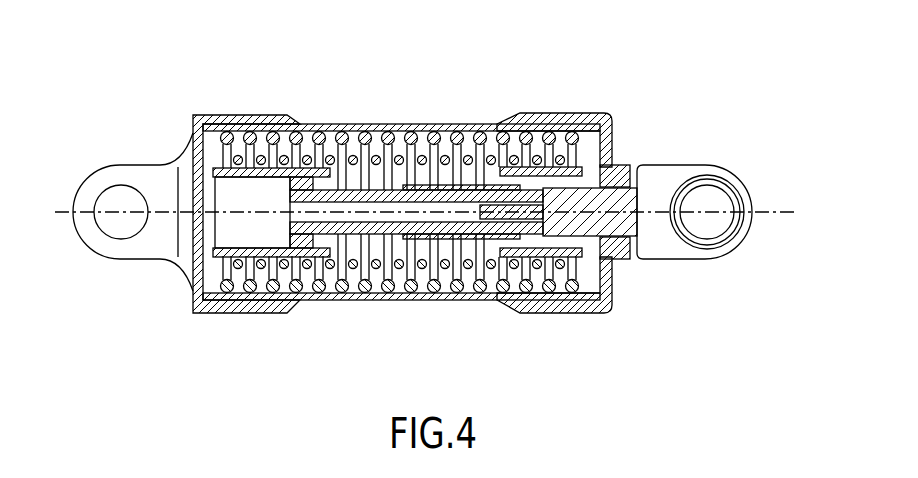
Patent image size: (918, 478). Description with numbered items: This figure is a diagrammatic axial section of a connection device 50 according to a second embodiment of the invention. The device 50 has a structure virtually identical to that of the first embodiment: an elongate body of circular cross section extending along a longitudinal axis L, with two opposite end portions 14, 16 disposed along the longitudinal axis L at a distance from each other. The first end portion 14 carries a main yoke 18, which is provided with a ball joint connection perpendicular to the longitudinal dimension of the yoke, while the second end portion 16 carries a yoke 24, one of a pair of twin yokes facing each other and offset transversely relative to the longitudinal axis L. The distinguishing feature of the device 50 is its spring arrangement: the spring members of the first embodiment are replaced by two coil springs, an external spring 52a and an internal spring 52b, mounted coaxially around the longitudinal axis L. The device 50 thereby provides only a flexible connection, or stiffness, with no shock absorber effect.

The connection device 50 is at (626, 98).
The first end portion 14 is at (653, 286).
The second end portion 16 is at (179, 311).
The main yoke 18 is at (693, 163).
The yoke 24 is at (135, 163).
The external coil spring 52a is at (387, 130).
The internal coil spring 52b is at (442, 130).
The longitudinal axis L is at (783, 212).